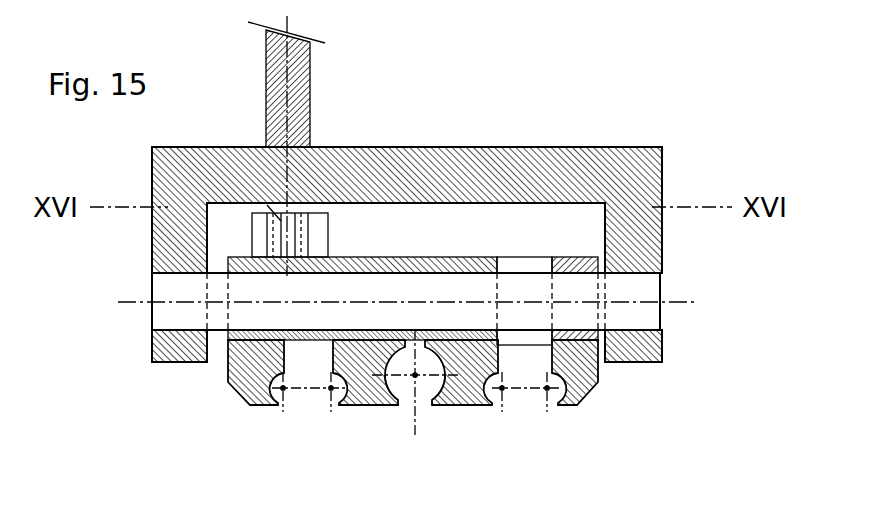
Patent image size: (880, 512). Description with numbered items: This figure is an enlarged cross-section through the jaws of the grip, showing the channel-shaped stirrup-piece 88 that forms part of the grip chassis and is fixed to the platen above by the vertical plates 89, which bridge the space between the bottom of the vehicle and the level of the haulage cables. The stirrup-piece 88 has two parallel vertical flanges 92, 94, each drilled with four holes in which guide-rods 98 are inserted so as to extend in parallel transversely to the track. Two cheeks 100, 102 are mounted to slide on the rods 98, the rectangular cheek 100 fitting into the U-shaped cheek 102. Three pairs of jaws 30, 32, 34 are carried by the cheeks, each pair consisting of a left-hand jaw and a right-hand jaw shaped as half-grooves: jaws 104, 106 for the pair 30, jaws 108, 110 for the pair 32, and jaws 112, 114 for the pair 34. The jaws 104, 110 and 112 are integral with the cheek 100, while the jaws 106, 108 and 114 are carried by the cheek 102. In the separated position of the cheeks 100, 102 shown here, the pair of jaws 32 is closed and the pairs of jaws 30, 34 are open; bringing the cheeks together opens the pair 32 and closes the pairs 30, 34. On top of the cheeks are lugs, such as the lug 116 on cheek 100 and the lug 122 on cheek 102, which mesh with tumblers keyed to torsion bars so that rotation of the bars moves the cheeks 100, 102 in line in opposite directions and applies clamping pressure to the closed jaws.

The stirrup-piece 88 is at (575, 172).
The plates 89 is at (299, 78).
The vertical flange 92 is at (165, 353).
The vertical flange 94 is at (642, 352).
The guide-rods 98 is at (638, 290).
The cheek 100 is at (397, 263).
The cheek 102 is at (578, 262).
The left-hand jaw 104 is at (275, 393).
The right-hand jaw 106 is at (331, 388).
The left-hand jaw 108 is at (407, 383).
The right-hand jaw 110 is at (423, 383).
The left-hand jaw 112 is at (504, 391).
The right-hand jaw 114 is at (548, 392).
The lug 116 is at (280, 220).
The lug 122 is at (313, 221).
The pair of jaws 30 is at (308, 382).
The pair of jaws 32 is at (415, 392).
The pair of jaws 34 is at (530, 382).